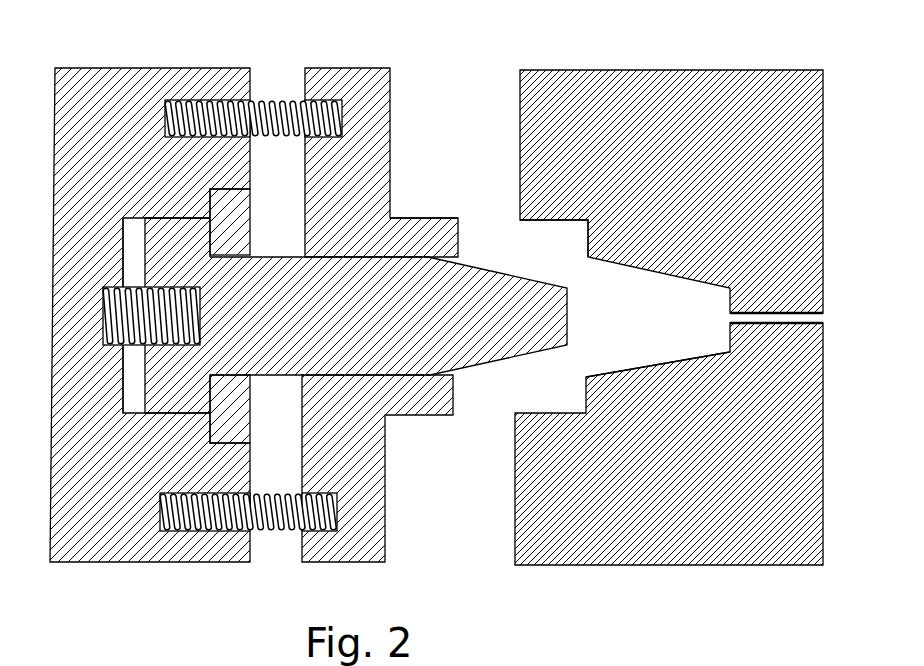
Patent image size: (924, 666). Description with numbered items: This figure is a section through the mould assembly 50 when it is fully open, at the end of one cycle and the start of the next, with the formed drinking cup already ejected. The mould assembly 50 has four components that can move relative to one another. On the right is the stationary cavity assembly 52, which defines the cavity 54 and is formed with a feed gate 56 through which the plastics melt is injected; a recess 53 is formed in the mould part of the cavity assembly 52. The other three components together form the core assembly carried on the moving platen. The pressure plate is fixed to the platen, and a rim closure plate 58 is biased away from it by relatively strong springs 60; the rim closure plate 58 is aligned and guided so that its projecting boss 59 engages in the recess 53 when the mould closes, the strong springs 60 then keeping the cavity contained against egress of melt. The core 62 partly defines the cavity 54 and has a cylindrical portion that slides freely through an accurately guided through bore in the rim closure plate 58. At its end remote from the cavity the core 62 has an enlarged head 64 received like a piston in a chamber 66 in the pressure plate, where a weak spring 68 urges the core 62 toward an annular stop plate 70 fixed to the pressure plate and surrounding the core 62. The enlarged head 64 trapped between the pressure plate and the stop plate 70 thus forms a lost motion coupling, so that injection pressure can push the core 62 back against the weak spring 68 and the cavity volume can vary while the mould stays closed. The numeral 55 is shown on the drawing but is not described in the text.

The mould assembly 50 is at (603, 582).
The cavity assembly 52 is at (722, 100).
The recess 53 is at (525, 222).
The cavity 54 is at (668, 356).
The outlet slot 55 is at (762, 324).
The feed gate 56 is at (137, 107).
The rim closure plate 58 is at (375, 75).
The projecting boss 59 is at (432, 218).
The strong springs 60 is at (270, 100).
The core 62 is at (462, 365).
The enlarged head 64 is at (168, 405).
The chamber 66 is at (130, 240).
The weak spring 68 is at (140, 345).
The annular stop plate 70 is at (240, 393).